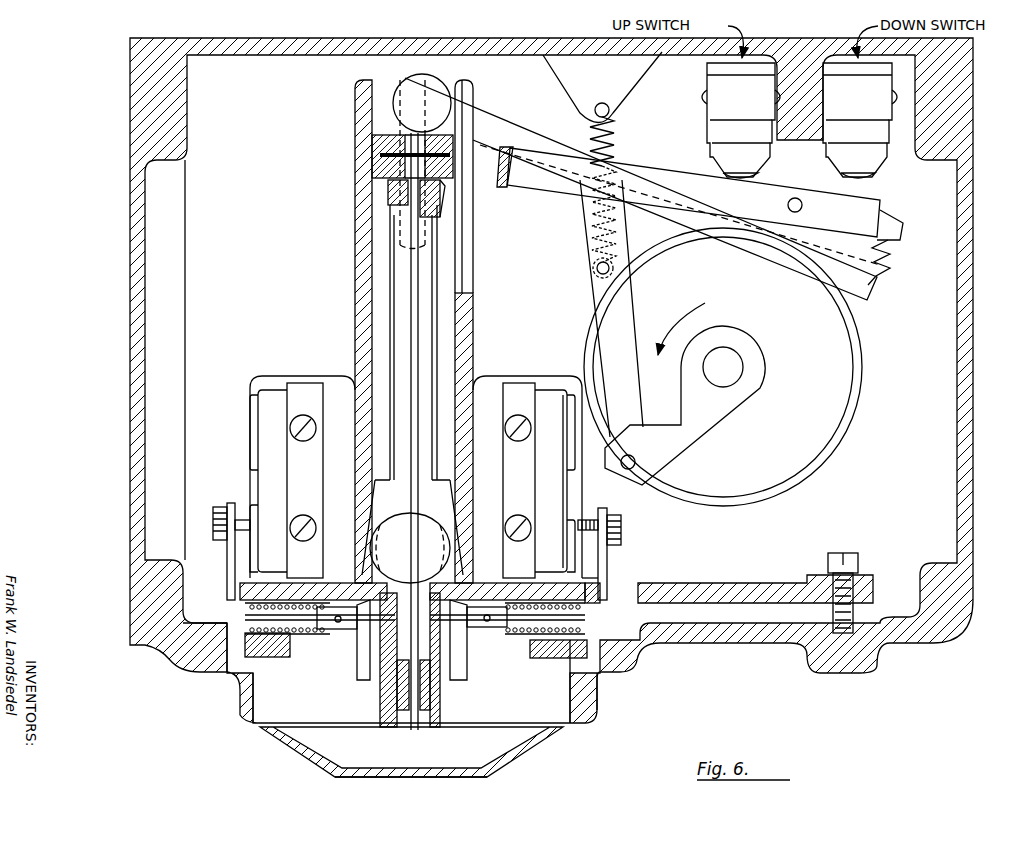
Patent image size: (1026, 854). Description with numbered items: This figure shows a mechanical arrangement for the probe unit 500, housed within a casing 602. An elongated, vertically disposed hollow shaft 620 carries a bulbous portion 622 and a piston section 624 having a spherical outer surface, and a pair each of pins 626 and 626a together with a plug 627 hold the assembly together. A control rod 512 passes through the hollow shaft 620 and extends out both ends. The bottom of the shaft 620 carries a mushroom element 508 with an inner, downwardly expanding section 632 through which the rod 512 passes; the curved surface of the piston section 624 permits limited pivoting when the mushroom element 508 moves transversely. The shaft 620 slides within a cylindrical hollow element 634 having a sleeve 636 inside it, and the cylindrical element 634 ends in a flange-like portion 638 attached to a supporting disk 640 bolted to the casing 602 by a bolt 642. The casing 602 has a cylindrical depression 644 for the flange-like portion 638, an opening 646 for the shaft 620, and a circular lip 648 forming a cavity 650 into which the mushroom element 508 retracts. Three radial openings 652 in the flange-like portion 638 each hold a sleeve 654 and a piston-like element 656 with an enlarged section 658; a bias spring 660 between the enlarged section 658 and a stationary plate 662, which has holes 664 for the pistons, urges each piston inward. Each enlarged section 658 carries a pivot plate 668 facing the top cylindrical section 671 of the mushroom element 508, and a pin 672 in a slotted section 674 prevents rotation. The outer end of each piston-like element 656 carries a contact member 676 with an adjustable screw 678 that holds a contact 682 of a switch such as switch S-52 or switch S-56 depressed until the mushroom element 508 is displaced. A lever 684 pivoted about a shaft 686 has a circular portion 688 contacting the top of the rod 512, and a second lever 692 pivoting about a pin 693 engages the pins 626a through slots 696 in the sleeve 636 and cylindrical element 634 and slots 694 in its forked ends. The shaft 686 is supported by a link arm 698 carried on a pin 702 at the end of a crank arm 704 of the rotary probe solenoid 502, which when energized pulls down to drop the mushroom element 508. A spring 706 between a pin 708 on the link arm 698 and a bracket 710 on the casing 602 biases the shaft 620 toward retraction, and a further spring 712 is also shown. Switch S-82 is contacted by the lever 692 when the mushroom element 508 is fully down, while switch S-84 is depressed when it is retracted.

The probe unit 500 is at (495, 380).
The probe solenoid 502 is at (830, 457).
The mushroom element 508 is at (303, 757).
The control rod 512 is at (395, 190).
The casing 602 is at (130, 333).
The shaft 620 is at (430, 309).
The bulbous portion 622 is at (428, 556).
The piston section 624 is at (380, 134).
The pins 626 is at (384, 150).
The pins 626a is at (386, 162).
The plug 627 is at (398, 138).
The downwardly expanding section 632 is at (462, 755).
The cylindrical hollow element 634 is at (358, 284).
The sleeve 636 is at (365, 312).
The flange-like portion 638 is at (600, 563).
The supporting disk 640 is at (709, 583).
The bolt 642 is at (852, 556).
The cylindrical depression 644 is at (208, 645).
The opening 646 is at (300, 660).
The circular lip 648 is at (598, 700).
The cavity 650 is at (562, 710).
The cylindrical openings 652 is at (262, 583).
The sleeve 654 is at (608, 612).
The piston-like element 656 is at (548, 643).
The enlarged section 658 is at (477, 634).
The bias spring 660 is at (600, 650).
The stationary plate 662 is at (600, 583).
The holes 664 is at (240, 644).
The pivot plate 668 is at (373, 680).
The top cylindrical section 671 is at (443, 707).
The pin 672 is at (503, 637).
The slotted section 674 is at (572, 670).
The contact member 676 is at (607, 550).
The adjustable screw 678 is at (622, 520).
The contacts 682 is at (603, 508).
The lever 684 is at (497, 118).
The shaft 686 is at (620, 166).
The circular portion 688 is at (400, 88).
The second lever 692 is at (555, 197).
The pin 693 is at (795, 198).
The slots 694 is at (433, 187).
The slots 696 is at (430, 92).
The link arm 698 is at (596, 298).
The pin 702 is at (637, 463).
The crank arm 704 is at (716, 425).
The spring 706 is at (616, 130).
The pin 708 is at (597, 266).
The bracket 710 is at (642, 84).
The spring 712 is at (872, 302).
The switch S-52 is at (304, 383).
The switch S-56 is at (518, 383).
The switch S-82 is at (878, 108).
The switch S-84 is at (762, 108).